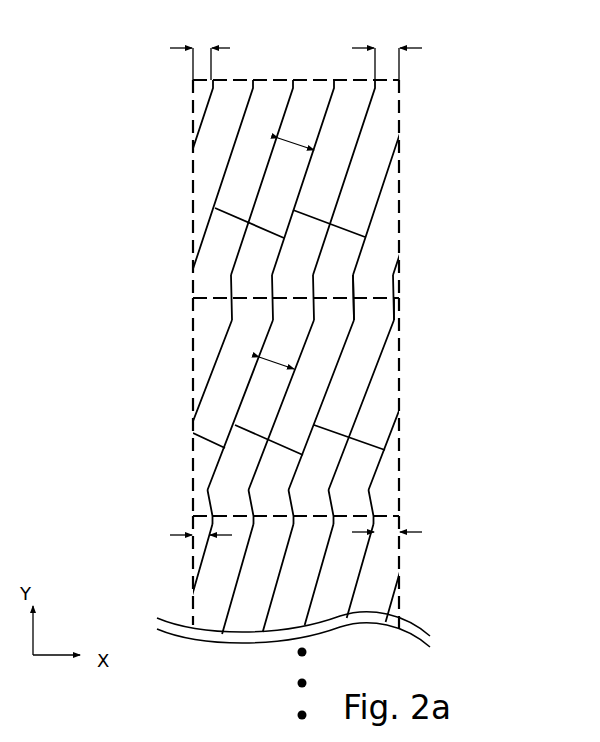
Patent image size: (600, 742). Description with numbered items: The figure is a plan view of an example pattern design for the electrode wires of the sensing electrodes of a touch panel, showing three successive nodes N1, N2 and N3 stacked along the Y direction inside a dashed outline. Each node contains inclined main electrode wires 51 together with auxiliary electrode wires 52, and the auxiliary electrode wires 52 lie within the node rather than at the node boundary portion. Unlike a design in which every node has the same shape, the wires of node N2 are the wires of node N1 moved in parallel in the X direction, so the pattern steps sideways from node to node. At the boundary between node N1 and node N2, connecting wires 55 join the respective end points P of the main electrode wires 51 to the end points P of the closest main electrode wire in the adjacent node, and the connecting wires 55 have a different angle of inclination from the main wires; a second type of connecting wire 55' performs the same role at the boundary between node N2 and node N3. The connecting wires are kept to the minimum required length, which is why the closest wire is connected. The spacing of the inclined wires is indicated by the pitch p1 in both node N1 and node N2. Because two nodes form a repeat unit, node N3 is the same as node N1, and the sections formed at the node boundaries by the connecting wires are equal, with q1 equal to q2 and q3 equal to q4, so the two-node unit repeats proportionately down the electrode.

The node N1 is at (372, 156).
The node N2 is at (402, 348).
The node N3 is at (401, 572).
The main electrode wires 51 is at (333, 218).
The auxiliary electrode wires 52 is at (343, 222).
The connecting wire 55 is at (341, 262).
The connecting wire 55' is at (340, 482).
The end points of the main electrode wires P is at (355, 272).
The pitch of the electrode wires p1 is at (285, 268).
The section formed at the node boundary q1 is at (200, 47).
The section formed at the node boundary q2 is at (188, 532).
The section formed at the node boundary q3 is at (387, 47).
The section formed at the node boundary q4 is at (401, 529).